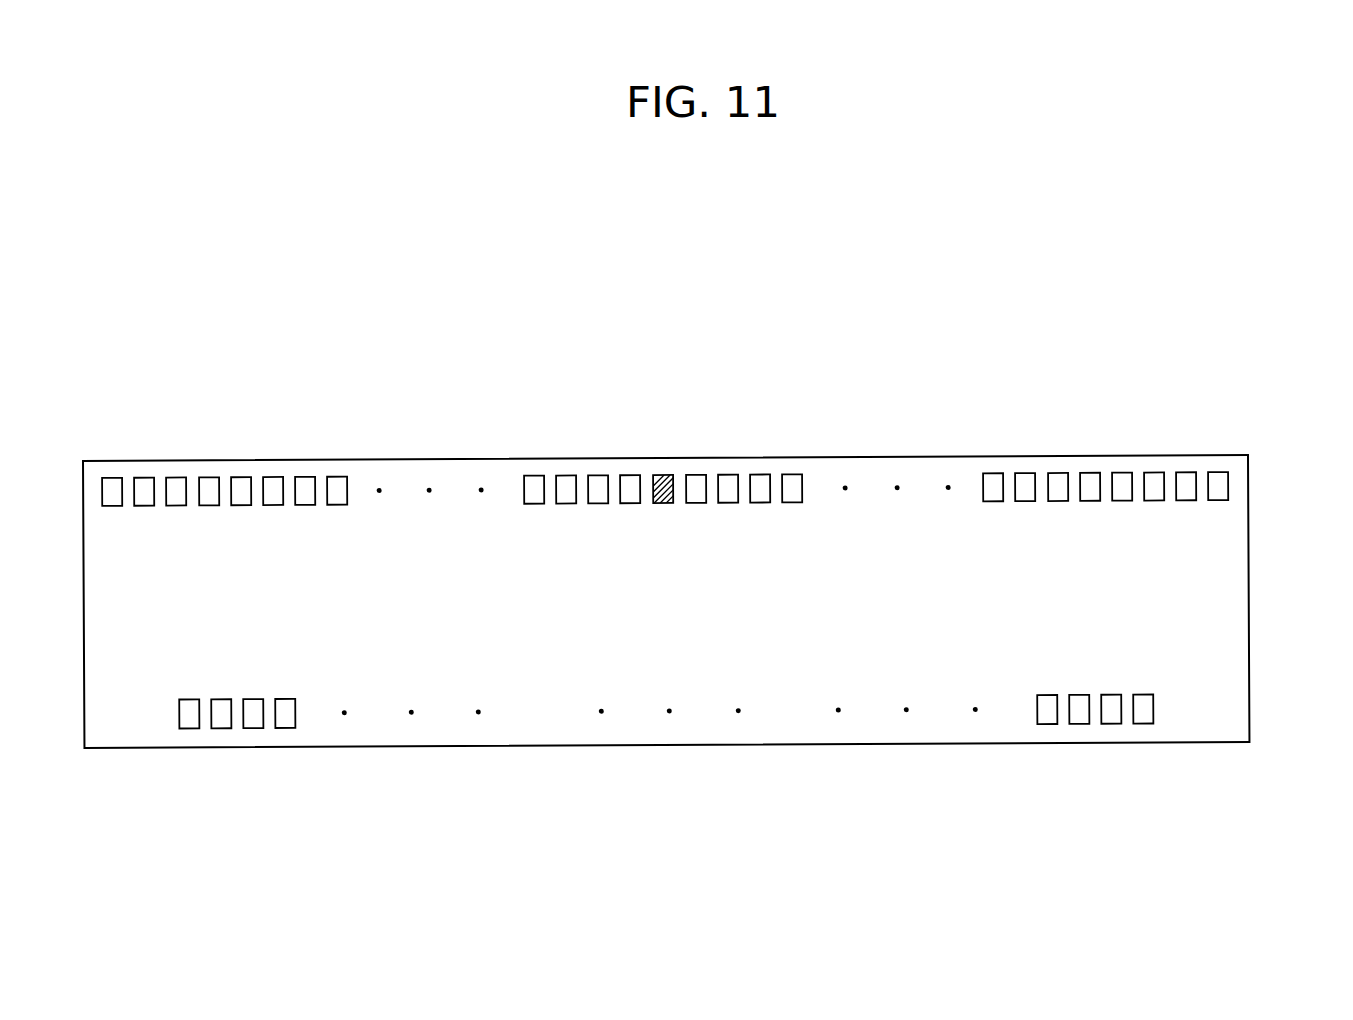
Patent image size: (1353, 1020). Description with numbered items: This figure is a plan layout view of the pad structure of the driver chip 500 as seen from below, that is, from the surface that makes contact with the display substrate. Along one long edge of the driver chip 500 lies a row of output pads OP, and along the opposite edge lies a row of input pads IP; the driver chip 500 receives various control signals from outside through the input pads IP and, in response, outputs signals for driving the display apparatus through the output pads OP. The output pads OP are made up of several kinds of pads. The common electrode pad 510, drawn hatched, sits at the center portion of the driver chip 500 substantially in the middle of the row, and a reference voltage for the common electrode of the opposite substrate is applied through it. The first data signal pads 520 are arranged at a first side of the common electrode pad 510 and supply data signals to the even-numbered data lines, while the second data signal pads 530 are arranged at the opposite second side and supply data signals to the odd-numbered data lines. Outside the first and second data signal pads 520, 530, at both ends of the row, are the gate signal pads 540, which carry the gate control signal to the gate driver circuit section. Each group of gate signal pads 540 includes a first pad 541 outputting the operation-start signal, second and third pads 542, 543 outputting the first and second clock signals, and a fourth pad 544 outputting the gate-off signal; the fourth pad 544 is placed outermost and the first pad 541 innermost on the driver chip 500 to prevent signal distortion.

The driver chip 500 is at (1248, 604).
The common electrode pad 510 is at (663, 478).
The first data signal pads 520 is at (637, 452).
The second data signal pads 530 is at (1090, 452).
The gate signal pads 540 is at (664, 420).
The first pad 541 is at (666, 444).
The second pad 542 is at (176, 478).
The third pad 543 is at (144, 478).
The fourth pad 544 is at (112, 478).
The output pads OP is at (1229, 492).
The input pads IP is at (1153, 714).